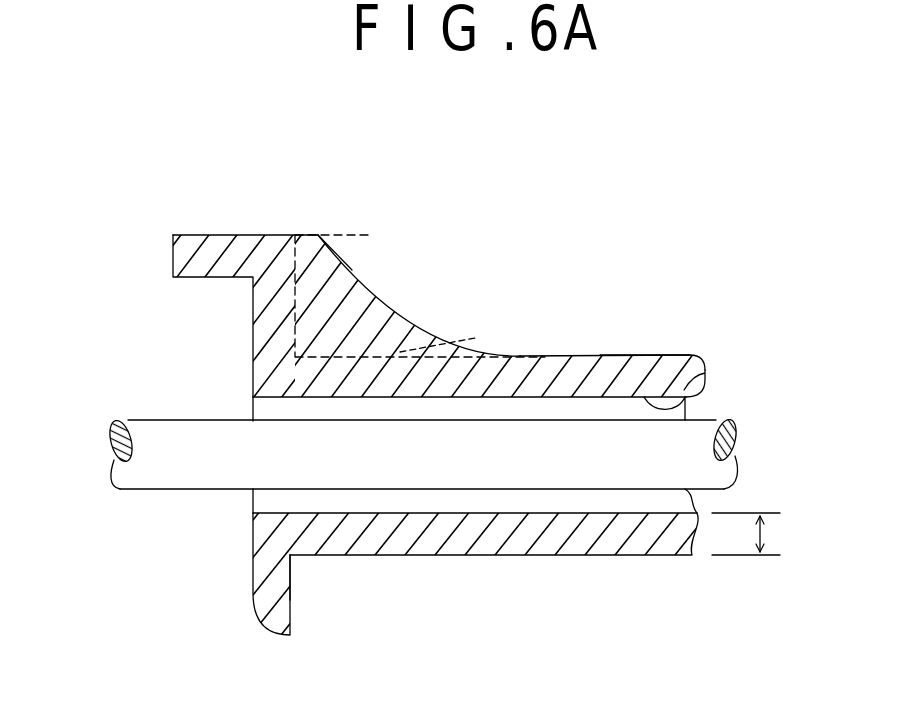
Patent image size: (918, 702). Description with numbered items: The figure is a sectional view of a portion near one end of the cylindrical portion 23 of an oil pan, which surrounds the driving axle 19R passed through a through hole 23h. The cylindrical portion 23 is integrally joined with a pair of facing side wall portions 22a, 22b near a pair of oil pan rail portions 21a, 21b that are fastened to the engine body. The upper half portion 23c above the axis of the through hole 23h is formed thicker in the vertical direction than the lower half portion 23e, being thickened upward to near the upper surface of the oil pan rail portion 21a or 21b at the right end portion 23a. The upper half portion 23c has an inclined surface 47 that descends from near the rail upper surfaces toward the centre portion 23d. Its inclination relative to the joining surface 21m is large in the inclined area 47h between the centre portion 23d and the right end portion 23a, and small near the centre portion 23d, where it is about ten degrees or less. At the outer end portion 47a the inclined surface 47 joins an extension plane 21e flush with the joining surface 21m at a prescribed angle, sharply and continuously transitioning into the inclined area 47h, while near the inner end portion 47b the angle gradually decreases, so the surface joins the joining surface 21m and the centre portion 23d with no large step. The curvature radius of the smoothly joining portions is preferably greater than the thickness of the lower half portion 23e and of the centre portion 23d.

The driving axle 19R is at (173, 419).
The oil pan rail portion 21a is at (220, 312).
The oil pan rail portion 21b is at (208, 253).
The joining surface 21m is at (222, 234).
The extension plane 21e is at (305, 234).
The side wall portion 22a is at (183, 574).
The side wall portion 22b is at (252, 563).
The cylindrical portion 23 is at (594, 341).
The right end portion 23a is at (289, 542).
The upper half portion 23c is at (705, 367).
The centre portion 23d is at (658, 355).
The lower half portion 23e is at (549, 540).
The through hole 23h is at (684, 401).
The inclined surface 47 is at (480, 351).
The outer end portion 47a is at (318, 234).
The inner end portion 47b is at (505, 340).
The inclined area 47h is at (397, 313).